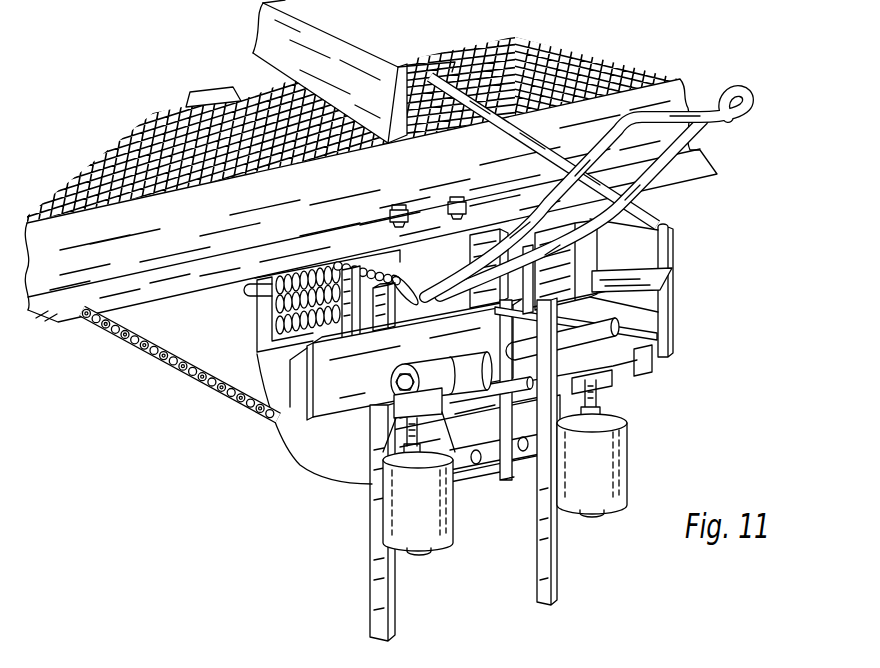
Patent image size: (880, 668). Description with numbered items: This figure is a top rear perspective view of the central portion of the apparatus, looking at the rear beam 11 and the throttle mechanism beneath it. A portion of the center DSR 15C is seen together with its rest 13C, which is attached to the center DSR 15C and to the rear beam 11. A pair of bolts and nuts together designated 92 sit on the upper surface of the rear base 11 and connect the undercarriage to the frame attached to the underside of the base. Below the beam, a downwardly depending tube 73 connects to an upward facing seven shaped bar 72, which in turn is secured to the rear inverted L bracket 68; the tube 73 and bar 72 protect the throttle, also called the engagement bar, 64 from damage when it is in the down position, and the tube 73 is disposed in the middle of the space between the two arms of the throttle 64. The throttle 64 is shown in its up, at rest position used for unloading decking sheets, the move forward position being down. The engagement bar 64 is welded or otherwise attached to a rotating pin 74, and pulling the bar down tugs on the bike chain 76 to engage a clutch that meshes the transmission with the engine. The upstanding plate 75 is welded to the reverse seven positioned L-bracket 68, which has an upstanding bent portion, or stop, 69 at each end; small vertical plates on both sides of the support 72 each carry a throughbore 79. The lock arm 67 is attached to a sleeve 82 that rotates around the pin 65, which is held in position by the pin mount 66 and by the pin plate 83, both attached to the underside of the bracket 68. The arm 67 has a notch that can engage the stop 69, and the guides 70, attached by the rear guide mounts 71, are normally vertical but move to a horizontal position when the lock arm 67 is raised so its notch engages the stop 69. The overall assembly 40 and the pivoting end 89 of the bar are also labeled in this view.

The rear beam 11 is at (146, 253).
The rest 13C is at (378, 57).
The center DSR 15C is at (263, 32).
The drive assembly 40 is at (737, 322).
The throttle 64 is at (742, 127).
The pin 65 is at (393, 382).
The pin mount 66 is at (462, 375).
The lock arm 67 is at (380, 582).
The rear inverted L bracket 68 is at (347, 345).
The upstanding bent portion 69 is at (389, 323).
The guides 70 is at (400, 515).
The rear guide mounts 71 is at (380, 450).
The 7 shaped bar 72 is at (650, 352).
The downwardly depending tube 73 is at (650, 207).
The rotating pin 74 is at (433, 293).
The plate 75 is at (470, 257).
The bike chain 76 is at (350, 262).
The throughbore 79 is at (478, 465).
The sleeve 82 is at (480, 382).
The pin plate 83 is at (517, 484).
The tube end 89 is at (432, 296).
The bolts and nuts 92 is at (392, 215).